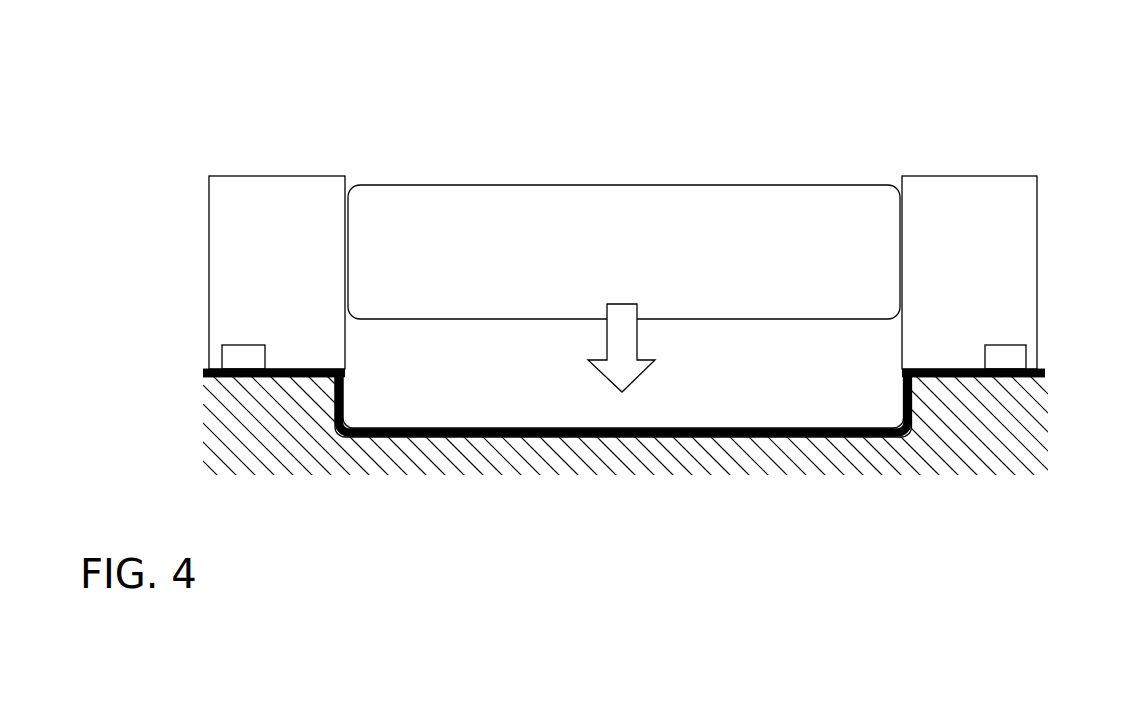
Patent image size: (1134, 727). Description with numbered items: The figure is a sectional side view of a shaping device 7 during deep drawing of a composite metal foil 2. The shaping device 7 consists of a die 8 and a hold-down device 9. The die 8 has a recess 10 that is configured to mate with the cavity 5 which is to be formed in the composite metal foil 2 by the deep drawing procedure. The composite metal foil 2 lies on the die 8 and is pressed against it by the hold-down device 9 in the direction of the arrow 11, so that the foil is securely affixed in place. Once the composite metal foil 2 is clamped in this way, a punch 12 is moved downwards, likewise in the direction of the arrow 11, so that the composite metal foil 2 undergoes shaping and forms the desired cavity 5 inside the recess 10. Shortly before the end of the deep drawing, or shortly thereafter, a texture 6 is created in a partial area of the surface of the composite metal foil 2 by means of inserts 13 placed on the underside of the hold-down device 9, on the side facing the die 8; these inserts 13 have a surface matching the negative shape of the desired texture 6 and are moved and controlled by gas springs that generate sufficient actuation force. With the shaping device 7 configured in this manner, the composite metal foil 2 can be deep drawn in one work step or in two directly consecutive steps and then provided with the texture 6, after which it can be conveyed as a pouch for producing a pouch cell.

The composite metal foil 2 is at (905, 391).
The cavity 5 is at (340, 405).
The texture 6 is at (240, 367).
The shaping device 7 is at (1000, 108).
The die 8 is at (1020, 448).
The hold-down device 9 is at (262, 203).
The recess 10 is at (908, 432).
The arrow 11 is at (629, 338).
The punch 12 is at (757, 193).
The inserts 13 is at (232, 355).